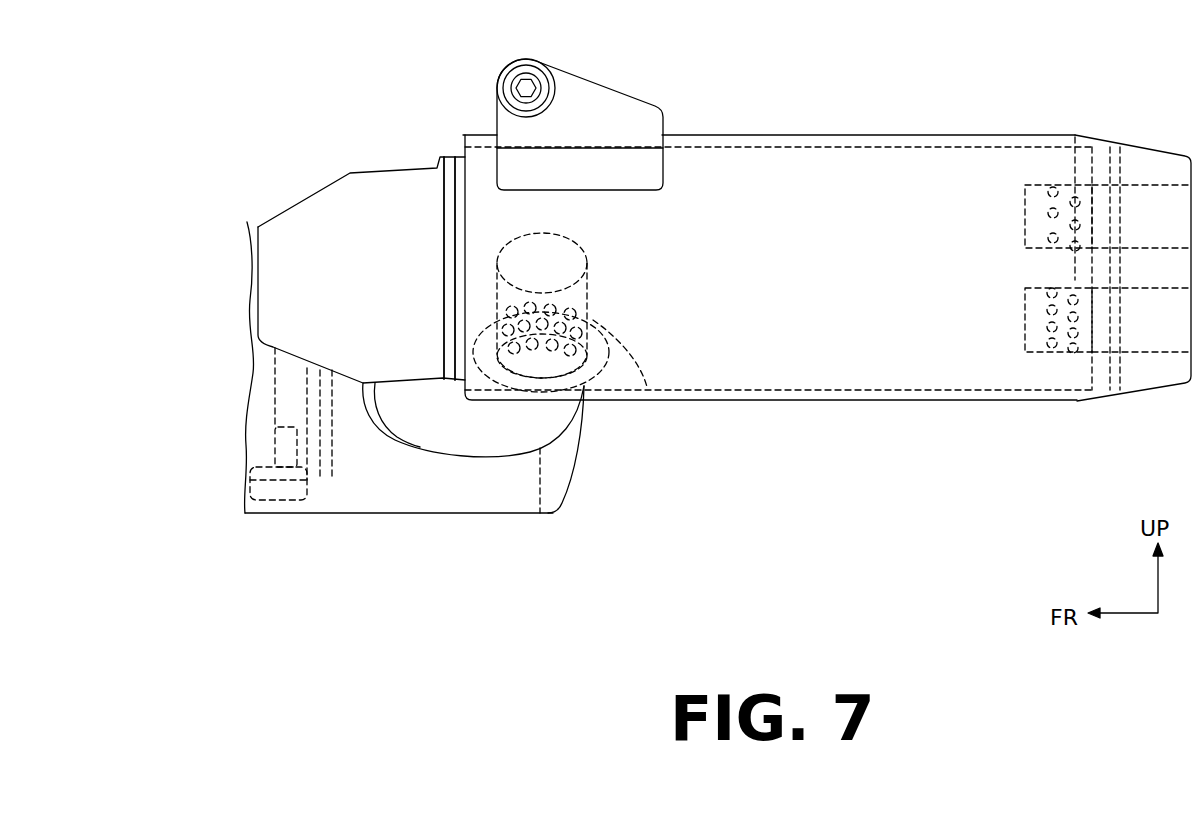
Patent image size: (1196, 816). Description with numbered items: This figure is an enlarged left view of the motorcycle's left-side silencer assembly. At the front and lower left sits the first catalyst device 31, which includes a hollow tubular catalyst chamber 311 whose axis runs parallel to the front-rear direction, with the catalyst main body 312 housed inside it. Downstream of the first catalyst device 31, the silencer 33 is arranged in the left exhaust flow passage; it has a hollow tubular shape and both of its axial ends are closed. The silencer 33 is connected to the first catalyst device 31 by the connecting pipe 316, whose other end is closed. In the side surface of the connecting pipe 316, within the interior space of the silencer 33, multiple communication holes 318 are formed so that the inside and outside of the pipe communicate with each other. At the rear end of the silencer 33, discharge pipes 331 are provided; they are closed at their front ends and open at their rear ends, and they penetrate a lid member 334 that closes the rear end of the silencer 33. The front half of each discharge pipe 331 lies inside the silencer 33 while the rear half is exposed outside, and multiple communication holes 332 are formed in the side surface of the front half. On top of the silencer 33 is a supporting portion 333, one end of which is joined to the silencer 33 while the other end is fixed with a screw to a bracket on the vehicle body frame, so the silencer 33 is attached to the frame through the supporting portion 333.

The first catalyst device 31 is at (412, 506).
The catalyst chamber 311 is at (367, 480).
The catalyst main body 312 is at (273, 513).
The connecting pipe 316 is at (505, 435).
The communication holes 318 is at (587, 310).
The silencer 33 is at (858, 141).
The discharge pipes 331 is at (1147, 180).
The communication holes 332 is at (1053, 192).
The supporting portion 333 is at (600, 105).
The lid member 334 is at (1110, 367).